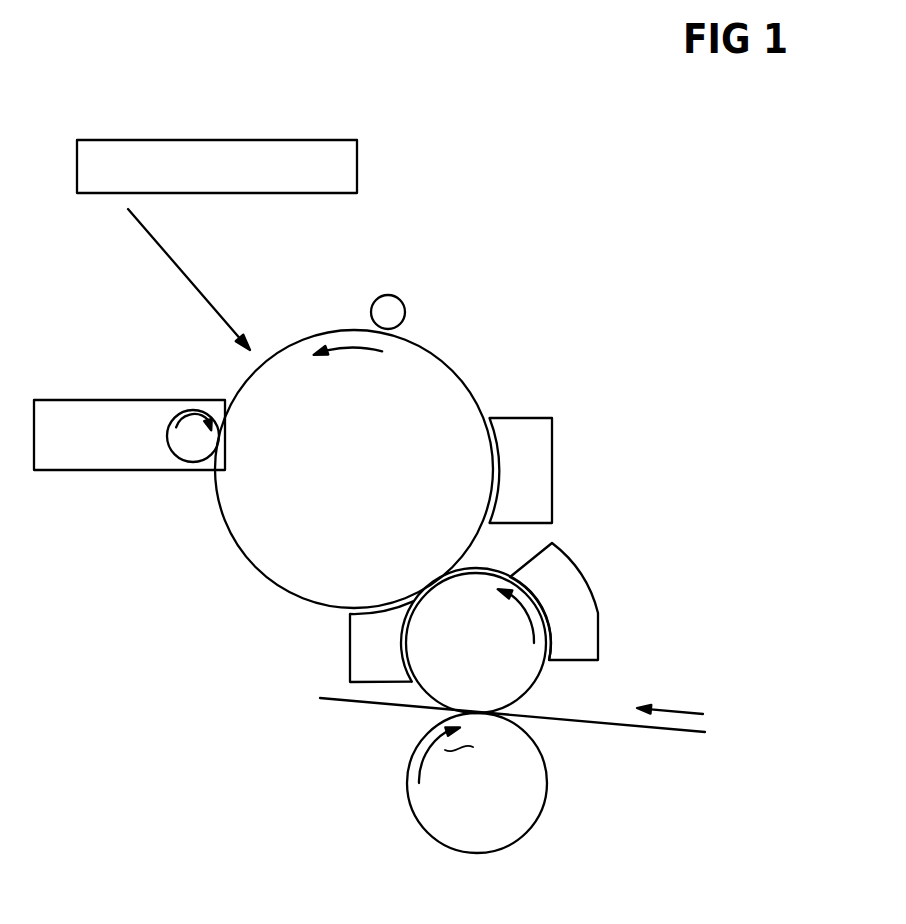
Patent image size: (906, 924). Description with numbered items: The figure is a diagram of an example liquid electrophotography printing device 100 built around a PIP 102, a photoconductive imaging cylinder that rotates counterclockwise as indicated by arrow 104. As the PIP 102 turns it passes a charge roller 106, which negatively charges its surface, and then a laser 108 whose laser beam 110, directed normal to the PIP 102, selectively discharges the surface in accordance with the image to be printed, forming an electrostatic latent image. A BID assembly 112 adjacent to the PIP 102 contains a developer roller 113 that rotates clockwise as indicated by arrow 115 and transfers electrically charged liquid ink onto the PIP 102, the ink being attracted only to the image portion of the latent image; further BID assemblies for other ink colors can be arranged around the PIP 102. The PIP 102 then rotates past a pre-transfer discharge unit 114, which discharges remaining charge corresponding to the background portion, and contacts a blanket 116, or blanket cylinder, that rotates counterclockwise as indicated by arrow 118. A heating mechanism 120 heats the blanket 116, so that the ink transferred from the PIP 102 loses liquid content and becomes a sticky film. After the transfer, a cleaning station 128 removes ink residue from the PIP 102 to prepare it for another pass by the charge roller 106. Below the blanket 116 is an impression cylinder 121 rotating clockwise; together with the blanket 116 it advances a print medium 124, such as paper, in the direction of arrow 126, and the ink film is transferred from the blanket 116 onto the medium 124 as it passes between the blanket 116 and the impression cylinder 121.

The LEP printing device 100 is at (664, 201).
The PIP 102 is at (373, 483).
The arrow 104 is at (353, 350).
The charge roller 106 is at (404, 312).
The laser 108 is at (233, 178).
The laser beam 110 is at (178, 260).
The BID assembly 112 is at (81, 449).
The developer roller 113 is at (180, 463).
The pre-transfer discharge unit 114 is at (357, 657).
The arrow 115 is at (185, 408).
The blanket 116 is at (496, 654).
The arrow 118 is at (512, 612).
The heating mechanism 120 is at (592, 615).
The impression cylinder 121 is at (495, 796).
The print medium 124 is at (620, 725).
The arrow 126 is at (680, 713).
The cleaning station 128 is at (549, 452).